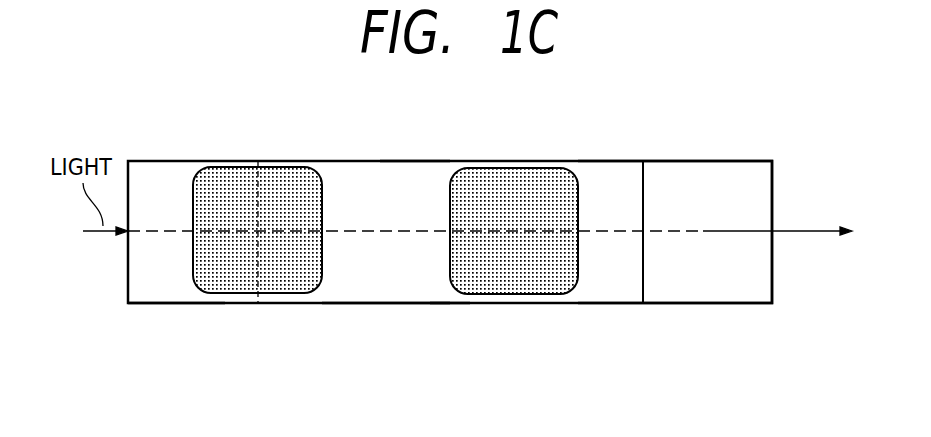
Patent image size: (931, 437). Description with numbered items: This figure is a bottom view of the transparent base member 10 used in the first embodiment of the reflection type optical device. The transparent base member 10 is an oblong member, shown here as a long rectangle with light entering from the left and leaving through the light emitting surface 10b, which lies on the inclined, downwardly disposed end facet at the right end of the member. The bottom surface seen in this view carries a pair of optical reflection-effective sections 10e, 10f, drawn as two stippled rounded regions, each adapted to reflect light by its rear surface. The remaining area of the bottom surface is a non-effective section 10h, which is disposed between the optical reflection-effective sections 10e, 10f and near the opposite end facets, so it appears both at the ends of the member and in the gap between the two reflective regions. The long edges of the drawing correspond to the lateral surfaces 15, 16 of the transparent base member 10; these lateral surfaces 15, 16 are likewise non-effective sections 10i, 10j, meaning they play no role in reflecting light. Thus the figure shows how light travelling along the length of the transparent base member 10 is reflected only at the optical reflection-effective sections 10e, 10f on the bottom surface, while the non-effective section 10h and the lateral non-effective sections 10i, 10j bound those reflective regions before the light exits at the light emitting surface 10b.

The transparent base member 10 is at (261, 160).
The light emitting surface 10b is at (717, 292).
The optical reflection-effective section 10e is at (280, 283).
The optical reflection-effective section 10f is at (527, 290).
The non-effective section 10h is at (147, 290).
The non-effective section 10i is at (203, 303).
The non-effective section 10j is at (598, 160).
The lateral surface 15 is at (450, 303).
The lateral surface 16 is at (413, 160).